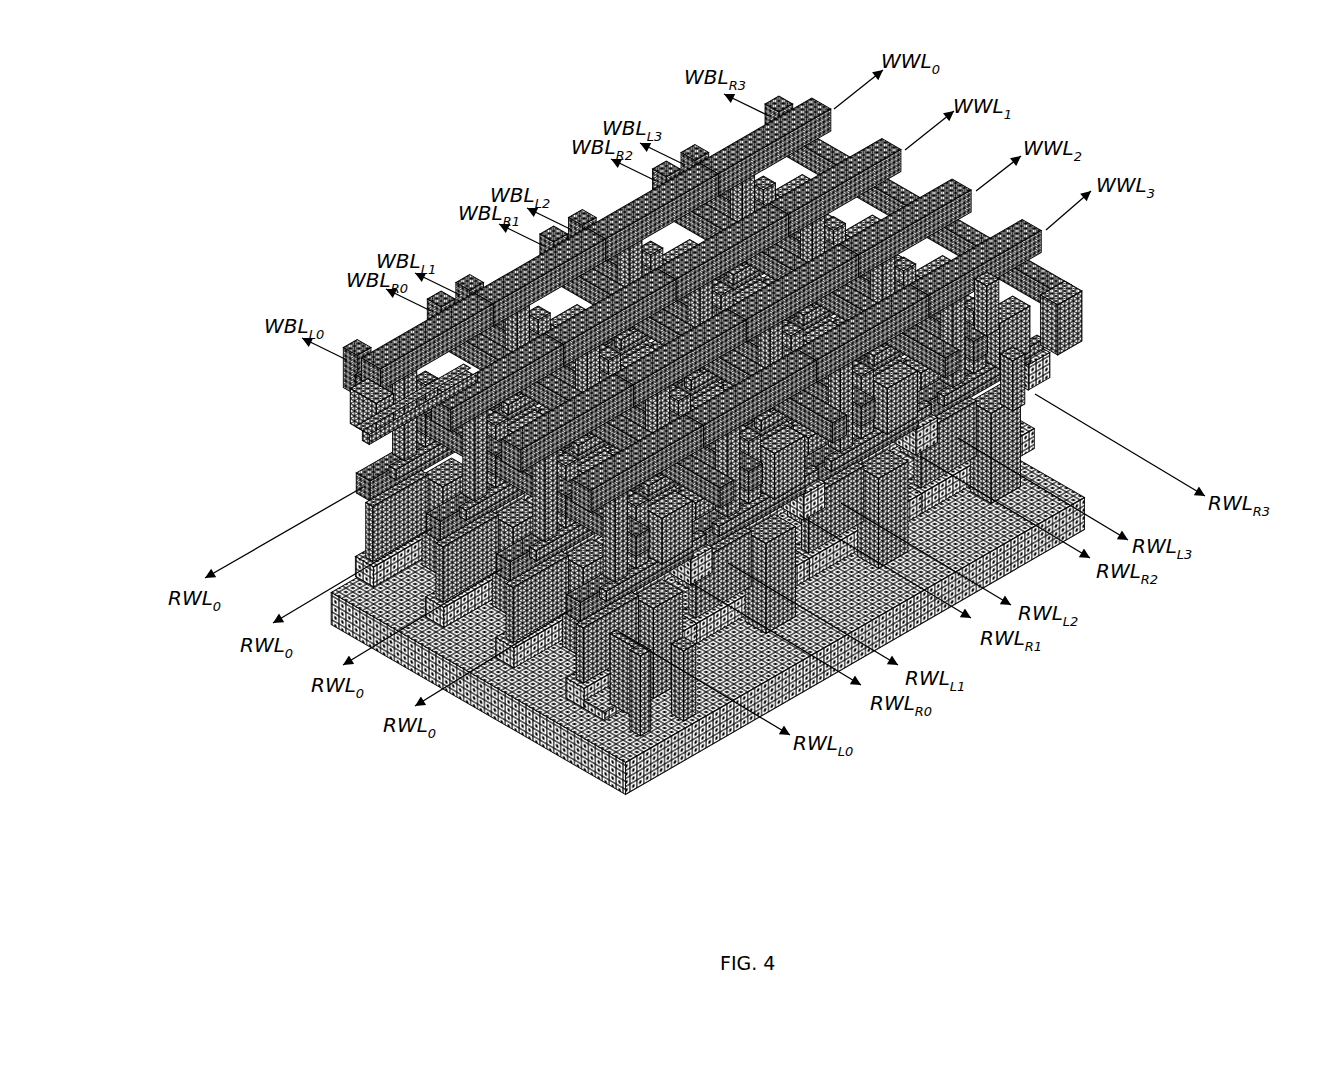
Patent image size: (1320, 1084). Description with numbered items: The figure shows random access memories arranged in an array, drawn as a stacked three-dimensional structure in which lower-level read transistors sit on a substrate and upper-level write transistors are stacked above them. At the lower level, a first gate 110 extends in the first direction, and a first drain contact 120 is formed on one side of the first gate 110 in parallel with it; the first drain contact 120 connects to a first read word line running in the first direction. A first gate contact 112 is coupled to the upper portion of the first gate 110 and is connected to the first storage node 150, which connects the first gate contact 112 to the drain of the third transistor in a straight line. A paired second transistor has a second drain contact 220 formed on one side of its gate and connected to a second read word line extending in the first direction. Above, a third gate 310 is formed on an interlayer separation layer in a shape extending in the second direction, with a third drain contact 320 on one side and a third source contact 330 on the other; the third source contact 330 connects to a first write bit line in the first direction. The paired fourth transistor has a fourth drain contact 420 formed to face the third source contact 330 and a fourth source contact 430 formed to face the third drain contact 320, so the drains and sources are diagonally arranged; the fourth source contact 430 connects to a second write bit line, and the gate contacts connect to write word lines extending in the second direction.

The third source contact 330 is at (340, 378).
The third gate 310 is at (368, 430).
The fourth drain contact 420 is at (973, 295).
The fourth source contact 430 is at (1045, 315).
The third drain contact 320 is at (998, 358).
The first storage node 150 is at (626, 604).
The first drain contact 120 is at (578, 720).
The first gate 110 is at (643, 700).
The first gate contact 112 is at (650, 670).
The second drain contact 220 is at (675, 672).